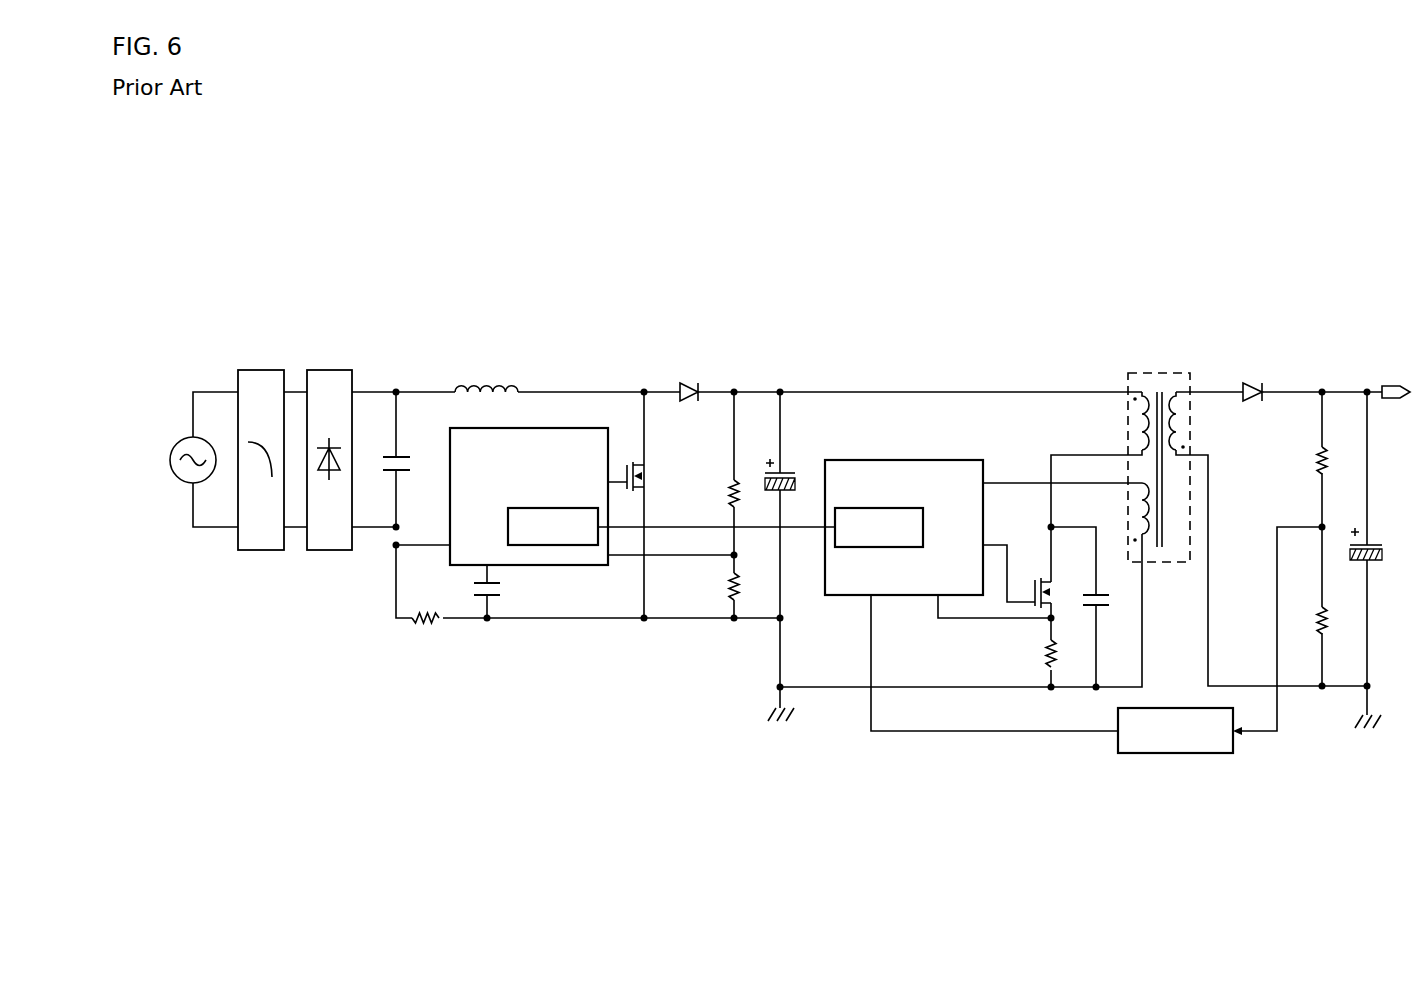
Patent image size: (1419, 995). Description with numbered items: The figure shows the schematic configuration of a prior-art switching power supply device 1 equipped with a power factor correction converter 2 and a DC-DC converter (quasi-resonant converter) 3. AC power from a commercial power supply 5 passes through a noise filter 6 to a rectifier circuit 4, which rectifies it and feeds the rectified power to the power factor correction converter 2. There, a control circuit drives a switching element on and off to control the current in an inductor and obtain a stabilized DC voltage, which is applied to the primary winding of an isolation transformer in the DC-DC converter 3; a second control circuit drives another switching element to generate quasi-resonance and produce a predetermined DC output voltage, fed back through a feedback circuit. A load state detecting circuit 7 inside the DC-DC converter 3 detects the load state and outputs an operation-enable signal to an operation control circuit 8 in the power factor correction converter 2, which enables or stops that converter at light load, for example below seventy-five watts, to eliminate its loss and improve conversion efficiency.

The switching power supply device 1 is at (793, 311).
The power factor correction converter 2 is at (780, 372).
The DC-DC converter (quasi-resonant converter) 3 is at (1367, 372).
The rectifier circuit 4 is at (337, 370).
The commercial power supply 5 is at (188, 442).
The noise filter 6 is at (268, 370).
The load state detecting circuit 7 is at (837, 549).
The operation control circuit 8 is at (532, 547).